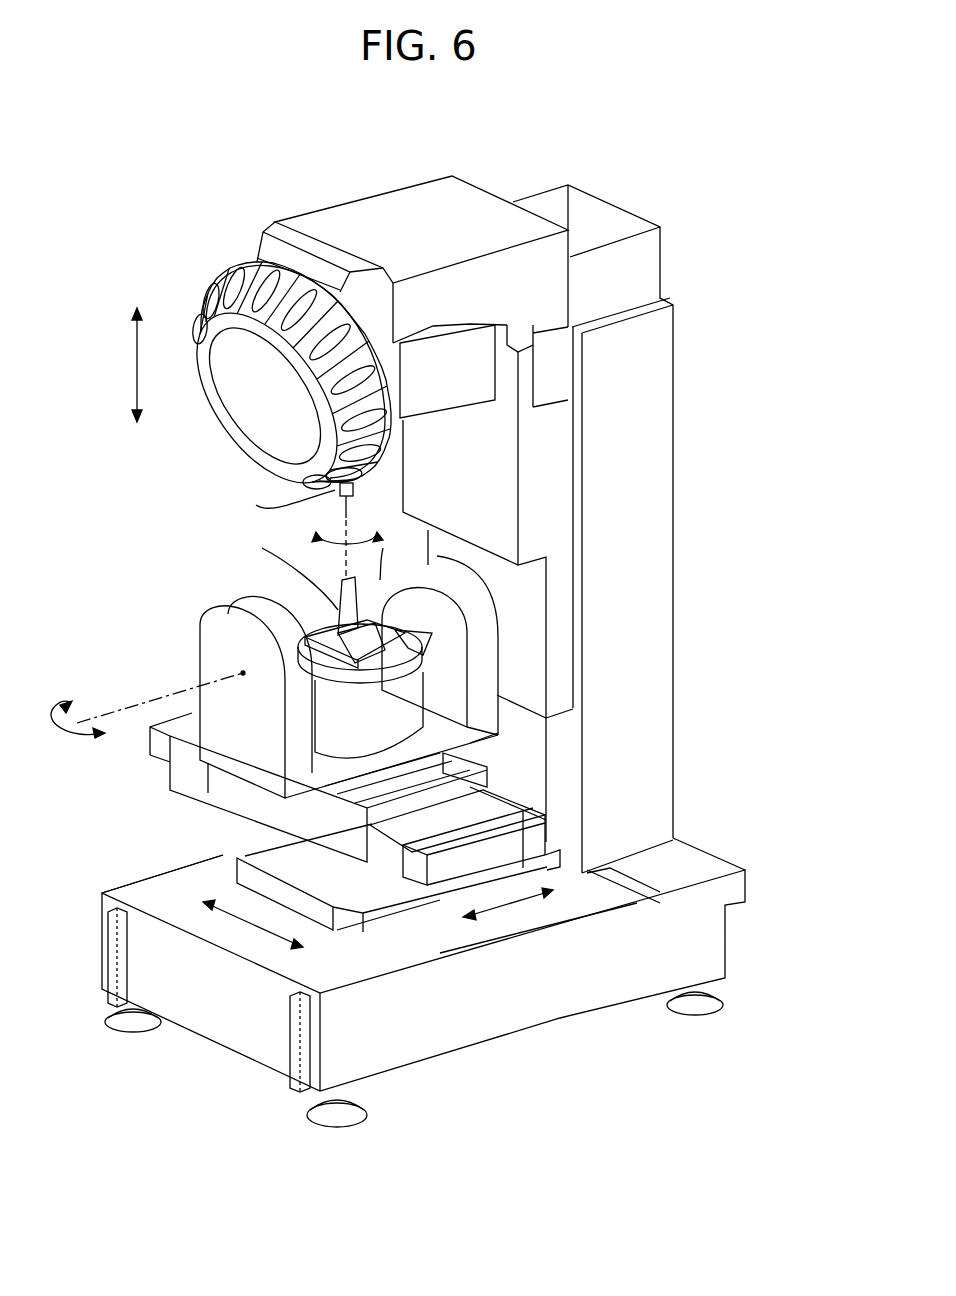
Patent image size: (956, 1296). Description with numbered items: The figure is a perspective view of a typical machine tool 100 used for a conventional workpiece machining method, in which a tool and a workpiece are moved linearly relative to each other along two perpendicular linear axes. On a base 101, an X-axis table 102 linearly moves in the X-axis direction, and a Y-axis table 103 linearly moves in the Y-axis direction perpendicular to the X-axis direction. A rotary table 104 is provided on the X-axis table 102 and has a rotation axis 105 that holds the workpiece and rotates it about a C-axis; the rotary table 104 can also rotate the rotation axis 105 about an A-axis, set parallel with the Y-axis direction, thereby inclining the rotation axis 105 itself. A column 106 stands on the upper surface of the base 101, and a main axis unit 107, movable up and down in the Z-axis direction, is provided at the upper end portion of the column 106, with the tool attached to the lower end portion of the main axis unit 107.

The machine tool 100 is at (688, 145).
The base 101 is at (715, 945).
The X-axis table 102 is at (178, 797).
The Y-axis table 103 is at (237, 857).
The rotary table 104 is at (212, 622).
The rotation axis 105 is at (307, 636).
The column 106 is at (673, 558).
The main axis unit 107 is at (393, 363).